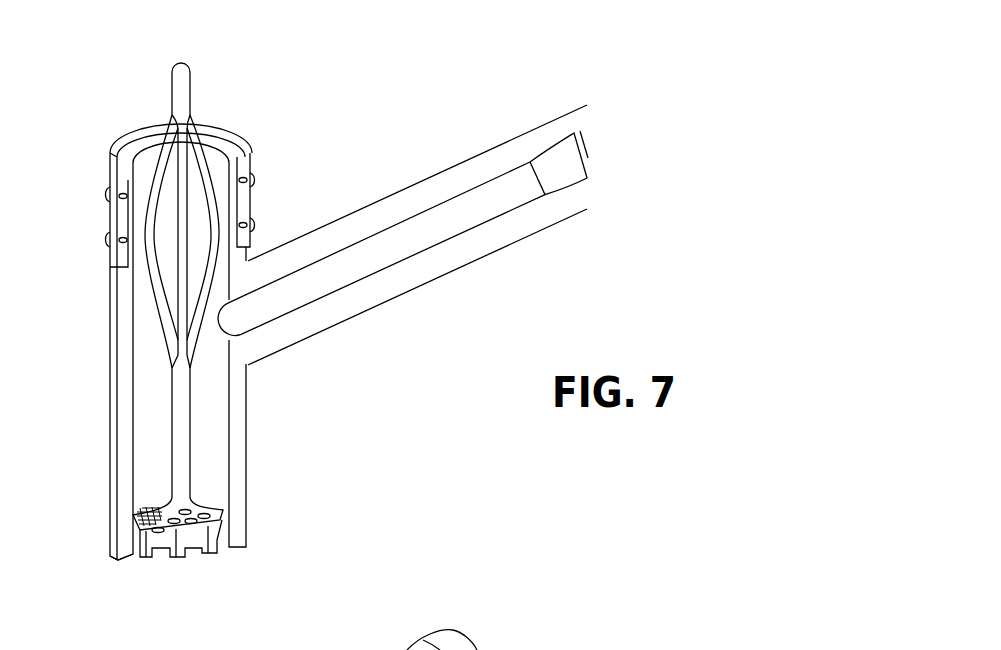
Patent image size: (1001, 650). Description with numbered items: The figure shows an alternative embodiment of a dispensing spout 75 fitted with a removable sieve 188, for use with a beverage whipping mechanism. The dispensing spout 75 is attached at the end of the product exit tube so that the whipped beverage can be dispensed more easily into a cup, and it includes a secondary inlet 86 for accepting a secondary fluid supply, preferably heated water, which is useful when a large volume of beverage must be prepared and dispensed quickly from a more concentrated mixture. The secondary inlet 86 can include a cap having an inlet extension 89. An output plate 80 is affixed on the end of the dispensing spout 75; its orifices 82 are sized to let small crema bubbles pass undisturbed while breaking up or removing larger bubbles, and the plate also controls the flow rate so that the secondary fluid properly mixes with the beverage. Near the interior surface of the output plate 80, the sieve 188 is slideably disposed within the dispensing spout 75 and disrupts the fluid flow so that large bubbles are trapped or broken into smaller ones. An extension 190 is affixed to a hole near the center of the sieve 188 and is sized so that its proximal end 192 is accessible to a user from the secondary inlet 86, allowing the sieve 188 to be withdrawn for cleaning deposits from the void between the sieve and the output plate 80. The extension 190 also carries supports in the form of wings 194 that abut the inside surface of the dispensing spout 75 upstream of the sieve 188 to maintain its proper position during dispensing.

The dispensing spout 75 is at (340, 273).
The output plate 80 is at (127, 548).
The orifices 82 is at (178, 543).
The secondary inlet 86 is at (214, 163).
The inlet extension 89 is at (470, 633).
The sieve 188 is at (210, 503).
The extension 190 is at (178, 410).
The proximal end 192 is at (183, 63).
The wings 194 is at (167, 170).